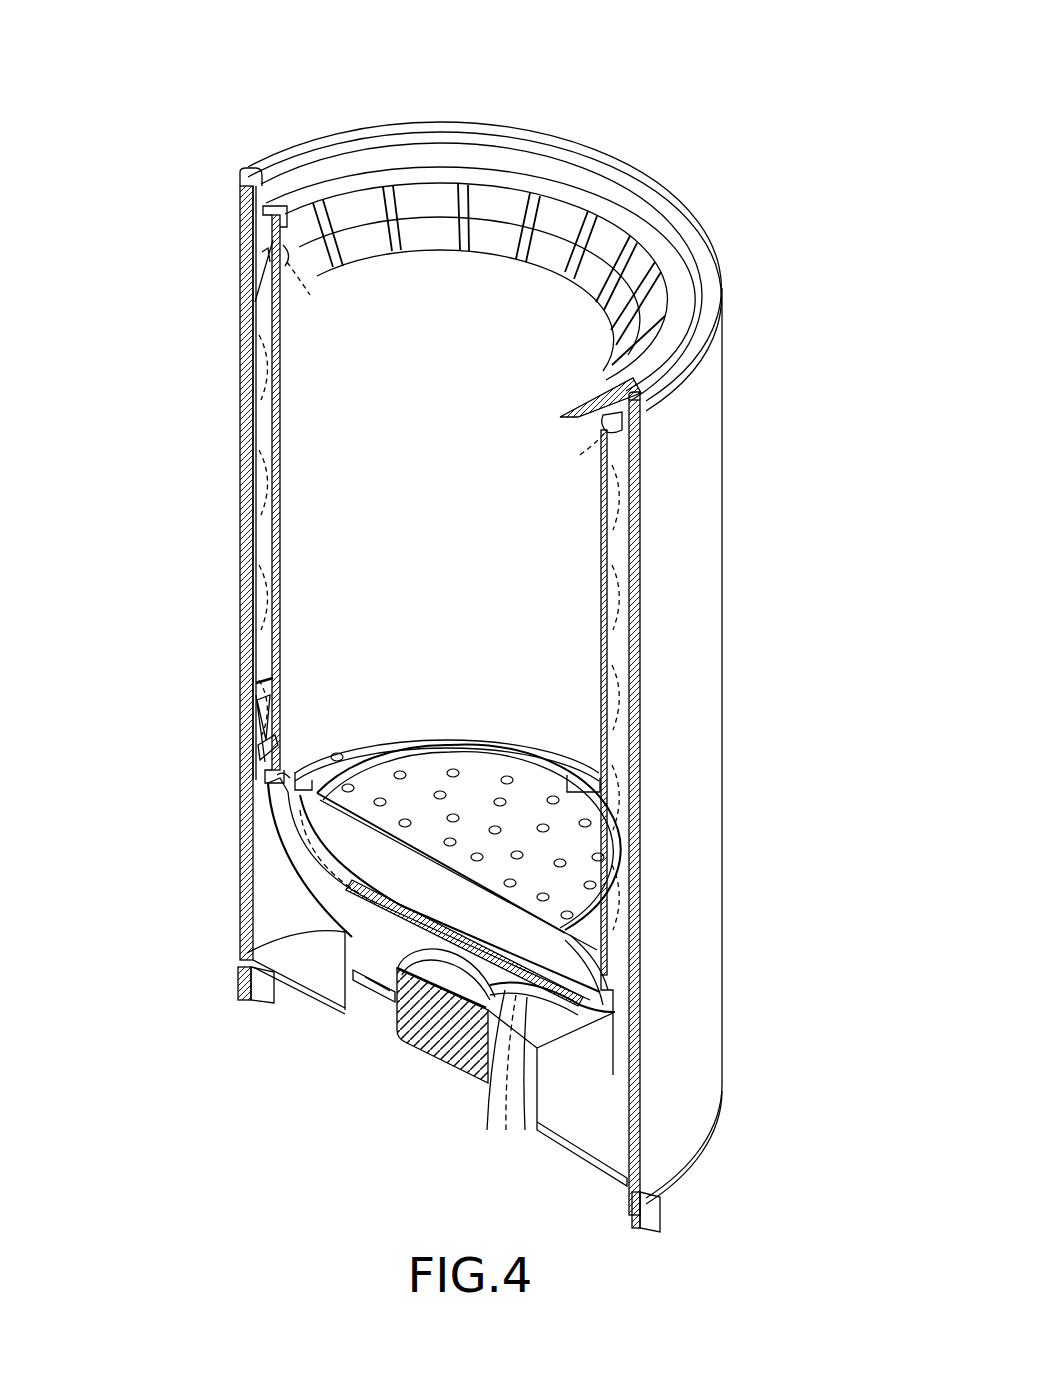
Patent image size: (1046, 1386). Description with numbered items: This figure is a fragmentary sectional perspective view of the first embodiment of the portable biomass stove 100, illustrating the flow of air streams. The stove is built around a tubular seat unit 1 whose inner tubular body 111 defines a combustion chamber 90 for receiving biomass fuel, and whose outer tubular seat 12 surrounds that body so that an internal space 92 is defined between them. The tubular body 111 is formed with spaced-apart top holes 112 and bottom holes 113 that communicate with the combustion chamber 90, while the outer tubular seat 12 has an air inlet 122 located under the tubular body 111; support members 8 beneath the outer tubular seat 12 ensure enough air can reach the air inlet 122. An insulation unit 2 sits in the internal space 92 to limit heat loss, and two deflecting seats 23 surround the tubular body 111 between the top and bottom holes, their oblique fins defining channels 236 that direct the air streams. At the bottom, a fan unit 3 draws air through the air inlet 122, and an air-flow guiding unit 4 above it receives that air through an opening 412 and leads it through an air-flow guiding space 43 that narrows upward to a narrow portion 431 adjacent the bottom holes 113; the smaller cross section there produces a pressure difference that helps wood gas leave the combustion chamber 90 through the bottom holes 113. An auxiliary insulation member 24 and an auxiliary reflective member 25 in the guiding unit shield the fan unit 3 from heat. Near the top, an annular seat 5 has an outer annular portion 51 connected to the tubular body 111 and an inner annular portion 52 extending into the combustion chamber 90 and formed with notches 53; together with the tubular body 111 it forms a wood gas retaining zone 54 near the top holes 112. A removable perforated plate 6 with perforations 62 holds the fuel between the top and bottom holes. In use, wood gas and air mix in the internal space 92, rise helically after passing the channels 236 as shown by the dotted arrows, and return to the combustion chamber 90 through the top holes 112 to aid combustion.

The portable biomass stove 100 is at (612, 125).
The tubular seat unit 1 is at (238, 628).
The tubular body 111 is at (250, 542).
The top holes 112 is at (641, 438).
The bottom holes 113 is at (646, 953).
The outer tubular seat 12 is at (695, 1090).
The air inlet 122 is at (366, 1002).
The insulation unit 2 is at (242, 796).
The deflecting seats 23 is at (250, 320).
The channel 236 is at (246, 273).
The auxiliary insulation member 24 is at (513, 992).
The auxiliary reflective member 25 is at (548, 1002).
The fan unit 3 is at (418, 1060).
The air-flow guiding unit 4 is at (300, 892).
The opening 412 is at (333, 938).
The air-flow guiding space 43 is at (300, 860).
The narrow portion 431 is at (277, 775).
The annular seat 5 is at (640, 226).
The outer annular portion 51 is at (458, 178).
The inner annular portion 52 is at (495, 232).
The notches 53 is at (532, 222).
The wood gas retaining zone 54 is at (690, 388).
The perforated plate 6 is at (578, 873).
The perforations 62 is at (510, 798).
The support members 8 is at (237, 990).
The combustion chamber 90 is at (425, 330).
The internal space 92 is at (617, 640).